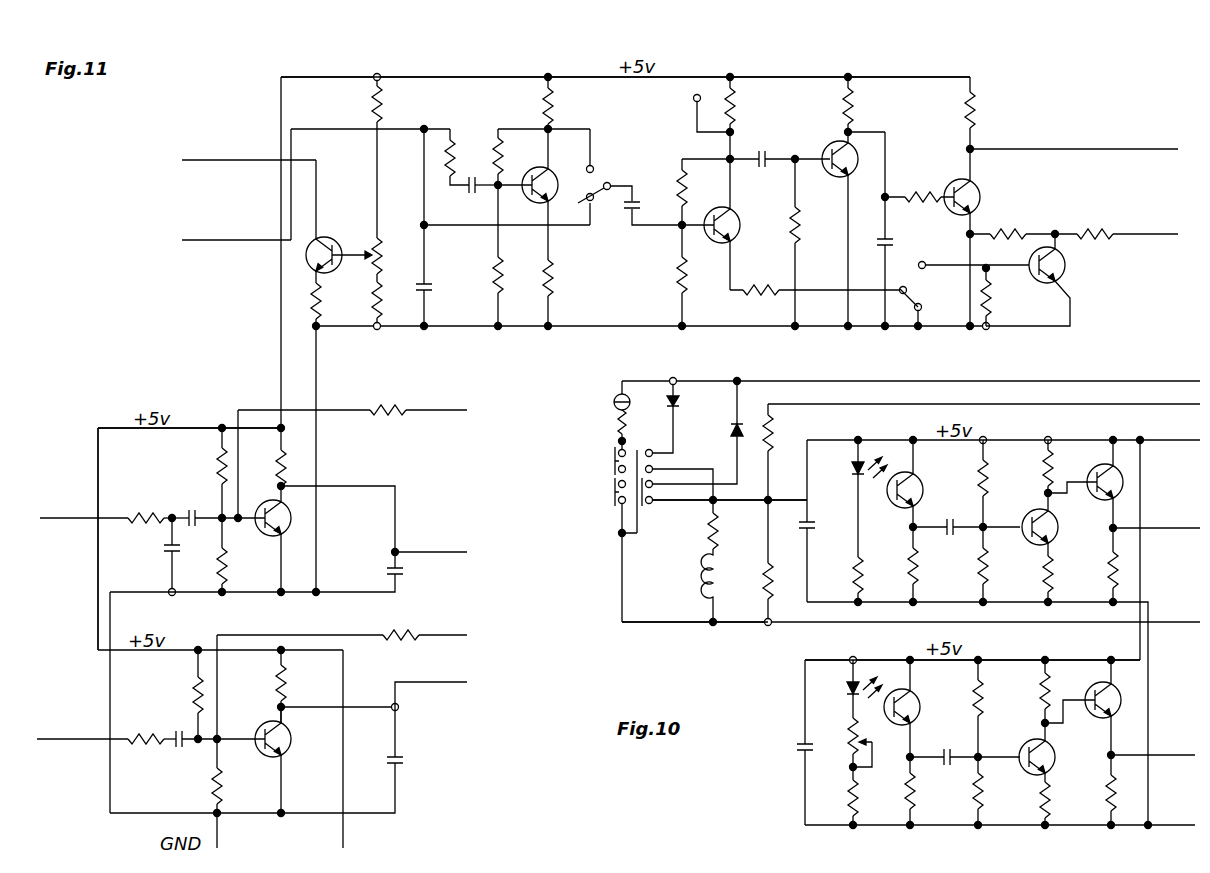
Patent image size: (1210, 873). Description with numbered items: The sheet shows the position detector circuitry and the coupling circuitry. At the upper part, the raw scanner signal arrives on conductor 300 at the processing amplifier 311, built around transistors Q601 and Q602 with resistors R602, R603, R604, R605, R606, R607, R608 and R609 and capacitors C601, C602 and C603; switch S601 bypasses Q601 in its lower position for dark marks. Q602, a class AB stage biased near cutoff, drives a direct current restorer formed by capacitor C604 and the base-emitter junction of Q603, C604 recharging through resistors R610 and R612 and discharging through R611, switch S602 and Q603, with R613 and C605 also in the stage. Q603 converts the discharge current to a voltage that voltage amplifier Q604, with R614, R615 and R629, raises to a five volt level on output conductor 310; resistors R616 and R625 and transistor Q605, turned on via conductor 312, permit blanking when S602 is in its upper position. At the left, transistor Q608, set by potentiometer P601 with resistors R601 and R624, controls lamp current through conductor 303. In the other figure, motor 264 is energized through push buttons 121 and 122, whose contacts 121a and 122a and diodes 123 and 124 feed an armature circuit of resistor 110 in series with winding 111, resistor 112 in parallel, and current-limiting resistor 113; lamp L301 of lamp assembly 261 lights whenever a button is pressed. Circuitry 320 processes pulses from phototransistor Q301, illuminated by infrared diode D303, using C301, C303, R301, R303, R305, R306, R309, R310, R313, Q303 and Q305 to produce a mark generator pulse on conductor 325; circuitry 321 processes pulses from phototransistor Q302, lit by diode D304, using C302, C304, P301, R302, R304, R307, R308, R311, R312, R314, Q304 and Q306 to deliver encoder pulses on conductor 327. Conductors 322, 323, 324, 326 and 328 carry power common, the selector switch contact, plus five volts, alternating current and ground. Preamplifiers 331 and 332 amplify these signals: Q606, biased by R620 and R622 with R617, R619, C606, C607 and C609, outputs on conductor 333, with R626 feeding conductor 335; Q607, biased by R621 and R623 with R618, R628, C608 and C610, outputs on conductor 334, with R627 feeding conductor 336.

In FIG. 11, the conductor 303 is at (213, 158).
In FIG. 11, the conductor 300 is at (213, 238).
In FIG. 11, the processing amplifier 311 is at (654, 100).
In FIG. 11, the resistor R602 is at (383, 104).
In FIG. 11, the potentiometer P601 is at (380, 240).
In FIG. 11, the resistor R624 is at (377, 298).
In FIG. 11, the transistor Q608 is at (350, 234).
In FIG. 11, the resistor R601 is at (332, 282).
In FIG. 11, the resistor R603 is at (455, 143).
In FIG. 11, the capacitor C602 is at (474, 193).
In FIG. 11, the resistor R604 is at (496, 135).
In FIG. 11, the transistor Q601 is at (560, 165).
In FIG. 11, the resistor R606 is at (553, 103).
In FIG. 11, the resistor R605 is at (492, 265).
In FIG. 11, the resistor R607 is at (556, 278).
In FIG. 11, the capacitor C601 is at (432, 288).
In FIG. 11, the switch S601 is at (590, 203).
In FIG. 11, the capacitor C603 is at (635, 198).
In FIG. 11, the resistor R608 is at (678, 175).
In FIG. 11, the transistor Q602 is at (736, 221).
In FIG. 11, the resistor R609 is at (678, 286).
In FIG. 11, the resistor R610 is at (737, 106).
In FIG. 11, the capacitor C604 is at (775, 137).
In FIG. 11, the resistor R612 is at (793, 212).
In FIG. 11, the transistor Q603 is at (836, 142).
In FIG. 11, the resistor R611 is at (780, 283).
In FIG. 11, the resistor R613 is at (858, 110).
In FIG. 11, the capacitor C605 is at (893, 238).
In FIG. 11, the resistor R614 is at (910, 190).
In FIG. 11, the voltage amplifier transistor Q604 is at (985, 188).
In FIG. 11, the resistor R615 is at (975, 105).
In FIG. 11, the output conductor 310 is at (1075, 147).
In FIG. 11, the resistor R629 is at (1005, 228).
In FIG. 11, the resistor R616 is at (1092, 230).
In FIG. 11, the conductor 312 is at (1138, 240).
In FIG. 11, the transistor Q605 is at (1050, 285).
In FIG. 11, the resistor R625 is at (992, 305).
In FIG. 11, the switch S602 is at (916, 302).
In FIG. 11, the resistor R619 is at (218, 462).
In FIG. 11, the conductor 325 is at (62, 516).
In FIG. 10, the conductor 325 is at (1163, 528).
In FIG. 11, the resistor R617 is at (155, 506).
In FIG. 11, the capacitor C606 is at (200, 497).
In FIG. 11, the capacitor C607 is at (168, 556).
In FIG. 11, the resistor R620 is at (226, 567).
In FIG. 11, the transistor Q606 is at (292, 527).
In FIG. 11, the resistor R622 is at (285, 462).
In FIG. 11, the preamplifier circuit 331 is at (338, 476).
In FIG. 11, the output conductor 335 is at (432, 407).
In FIG. 11, the resistor R626 is at (404, 396).
In FIG. 11, the conductor 333 is at (437, 547).
In FIG. 11, the capacitor C609 is at (390, 576).
In FIG. 11, the resistor R628 is at (195, 690).
In FIG. 11, the conductor 327 is at (62, 738).
In FIG. 10, the conductor 327 is at (1163, 755).
In FIG. 11, the resistor R618 is at (160, 729).
In FIG. 11, the capacitor C608 is at (176, 746).
In FIG. 11, the resistor R621 is at (213, 790).
In FIG. 11, the resistor R623 is at (284, 686).
In FIG. 11, the preamplifier circuit 332 is at (313, 699).
In FIG. 11, the output conductor 334 is at (430, 681).
In FIG. 11, the capacitor C610 is at (400, 756).
In FIG. 11, the transistor Q607 is at (290, 757).
In FIG. 11, the resistor R627 is at (395, 622).
In FIG. 11, the output conductor 336 is at (445, 635).
In FIG. 10, the conductor 322 is at (1160, 380).
In FIG. 10, the conductor 323 is at (1153, 403).
In FIG. 10, the conductor 324 is at (1167, 430).
In FIG. 10, the conductor 326 is at (1165, 620).
In FIG. 10, the conductor 328 is at (1173, 825).
In FIG. 10, the lamp assembly 261 is at (612, 396).
In FIG. 10, the lamp L301 is at (613, 402).
In FIG. 10, the push button 121 is at (611, 455).
In FIG. 10, the push button 122 is at (611, 487).
In FIG. 10, the contact 121a is at (640, 450).
In FIG. 10, the contact 122a is at (614, 506).
In FIG. 10, the diode 123 is at (679, 400).
In FIG. 10, the diode 124 is at (752, 430).
In FIG. 10, the resistor 113 is at (777, 436).
In FIG. 10, the resistor 112 is at (765, 577).
In FIG. 10, the resistor 110 is at (708, 526).
In FIG. 10, the armature winding 111 is at (705, 578).
In FIG. 10, the motor 264 is at (741, 592).
In FIG. 10, the circuitry 320 is at (1017, 452).
In FIG. 10, the capacitor C301 is at (813, 520).
In FIG. 10, the light emitting diode D303 is at (850, 470).
In FIG. 10, the resistor R301 is at (862, 575).
In FIG. 10, the phototransistor Q301 is at (923, 482).
In FIG. 10, the capacitor C303 is at (957, 514).
In FIG. 10, the resistor R303 is at (918, 582).
In FIG. 10, the resistor R305 is at (995, 464).
In FIG. 10, the resistor R306 is at (987, 578).
In FIG. 10, the resistor R310 is at (1043, 582).
In FIG. 10, the resistor R309 is at (1053, 470).
In FIG. 10, the transistor Q305 is at (1090, 498).
In FIG. 10, the transistor Q303 is at (1052, 542).
In FIG. 10, the resistor R313 is at (1108, 578).
In FIG. 10, the circuitry 321 is at (998, 683).
In FIG. 10, the capacitor C302 is at (803, 749).
In FIG. 10, the light emitting diode D304 is at (846, 692).
In FIG. 10, the potentiometer P301 is at (847, 736).
In FIG. 10, the resistor R302 is at (853, 796).
In FIG. 10, the phototransistor Q302 is at (918, 695).
In FIG. 10, the capacitor C304 is at (943, 752).
In FIG. 10, the resistor R304 is at (916, 795).
In FIG. 10, the resistor R307 is at (984, 706).
In FIG. 10, the resistor R311 is at (1044, 692).
In FIG. 10, the resistor R308 is at (990, 781).
In FIG. 10, the resistor R312 is at (1041, 805).
In FIG. 10, the transistor Q304 is at (1053, 753).
In FIG. 10, the transistor Q306 is at (1100, 684).
In FIG. 10, the resistor R314 is at (1106, 785).